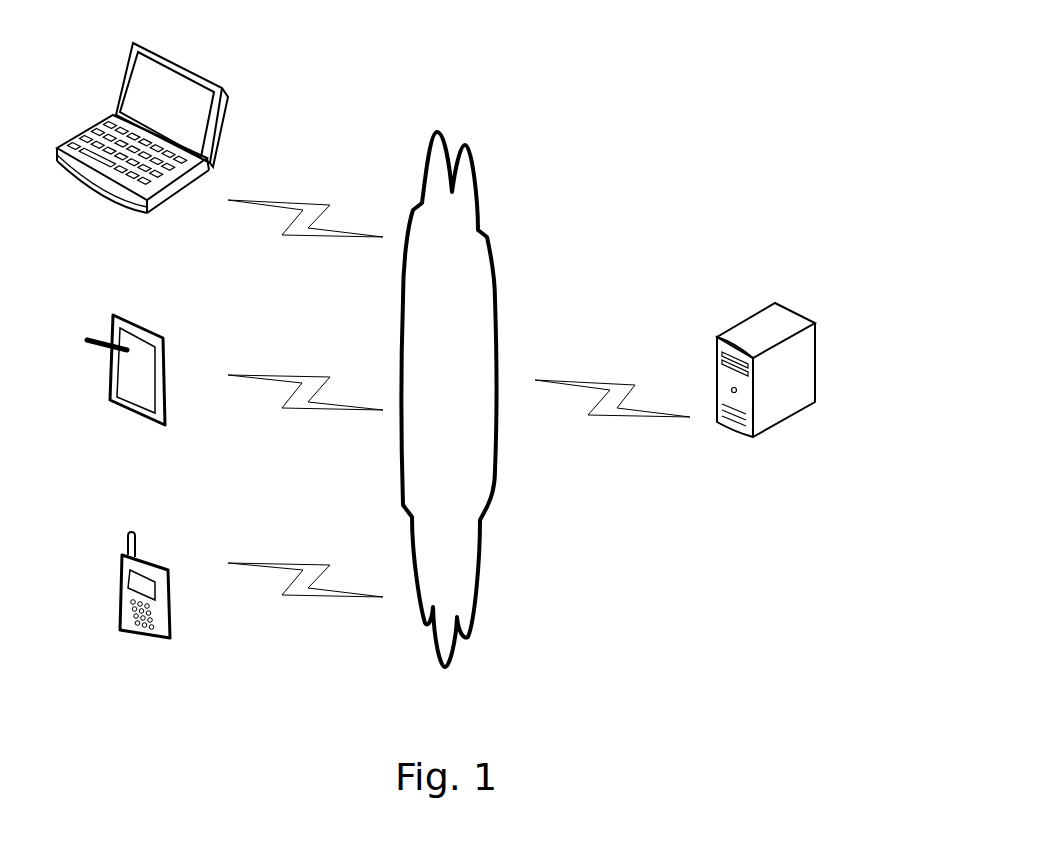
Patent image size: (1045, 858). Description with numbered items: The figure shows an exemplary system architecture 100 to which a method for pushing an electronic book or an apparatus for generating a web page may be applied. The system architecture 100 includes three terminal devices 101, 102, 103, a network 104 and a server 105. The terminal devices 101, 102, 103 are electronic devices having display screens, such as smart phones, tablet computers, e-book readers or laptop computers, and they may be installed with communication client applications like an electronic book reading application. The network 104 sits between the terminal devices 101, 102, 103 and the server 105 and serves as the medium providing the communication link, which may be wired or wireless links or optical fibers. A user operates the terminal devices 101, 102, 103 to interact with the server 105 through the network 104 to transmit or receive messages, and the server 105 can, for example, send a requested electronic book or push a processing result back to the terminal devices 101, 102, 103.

The system architecture 100 is at (718, 33).
The terminal device 101 is at (145, 610).
The terminal device 102 is at (126, 391).
The terminal device 103 is at (142, 149).
The network 104 is at (449, 399).
The server 105 is at (766, 395).